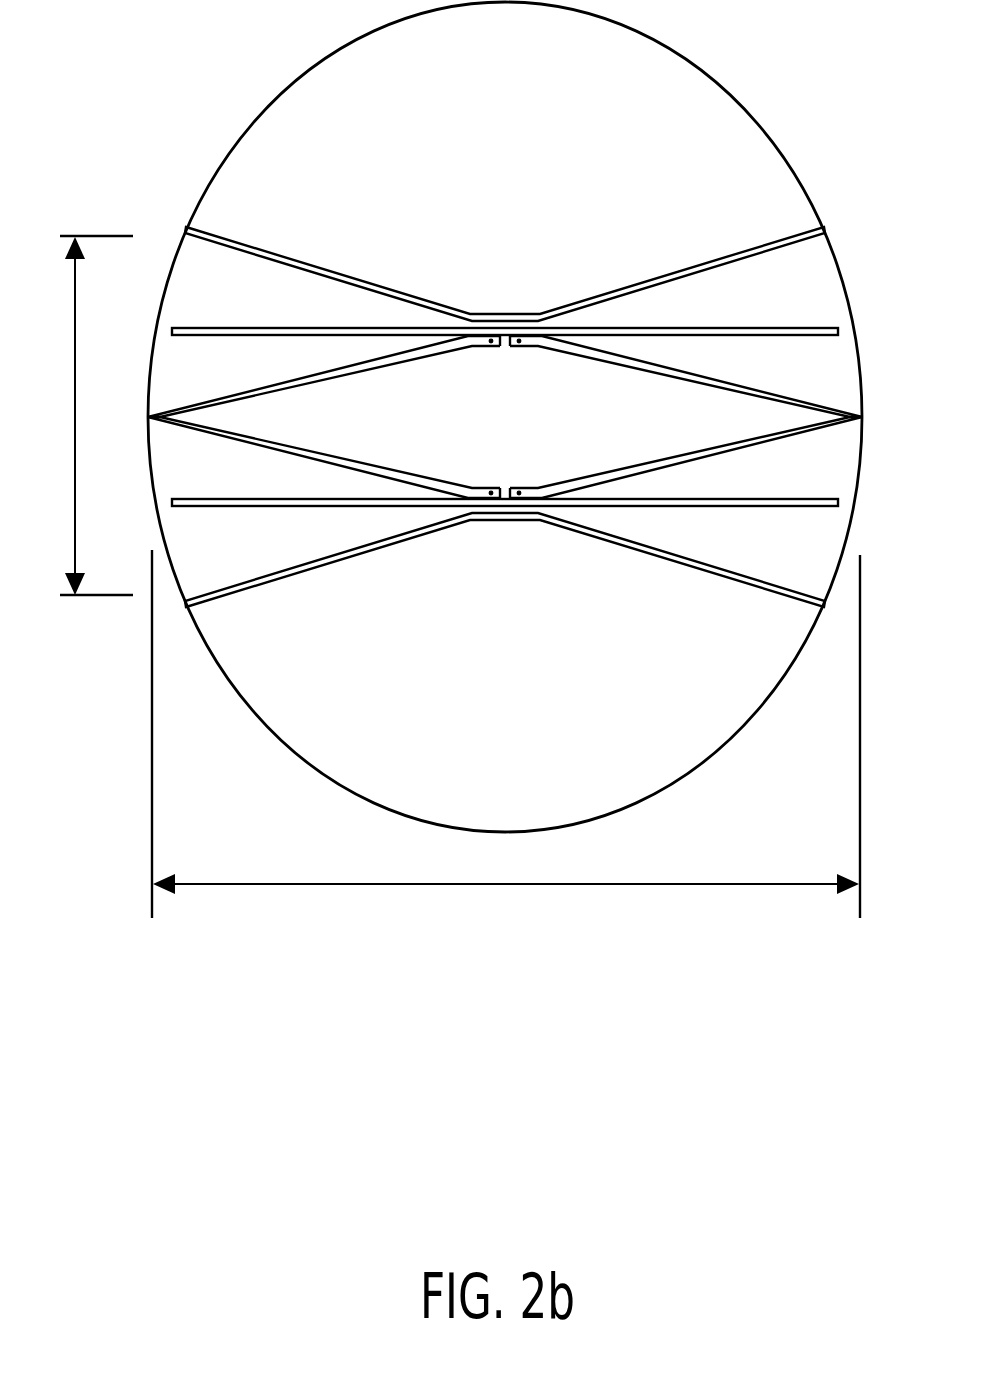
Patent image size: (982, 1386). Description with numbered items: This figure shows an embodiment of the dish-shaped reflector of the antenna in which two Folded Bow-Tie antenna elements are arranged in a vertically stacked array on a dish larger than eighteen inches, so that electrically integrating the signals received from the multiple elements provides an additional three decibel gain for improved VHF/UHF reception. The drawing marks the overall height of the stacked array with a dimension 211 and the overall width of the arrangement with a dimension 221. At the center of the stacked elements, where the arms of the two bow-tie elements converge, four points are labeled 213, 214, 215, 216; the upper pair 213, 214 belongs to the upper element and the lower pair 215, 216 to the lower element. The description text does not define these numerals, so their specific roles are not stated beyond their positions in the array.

The height of antenna element 211 is at (71, 415).
The feed point 213 is at (492, 355).
The feed point 214 is at (514, 355).
The feed point 215 is at (490, 479).
The feed point 216 is at (520, 479).
The width of antenna element 221 is at (506, 746).